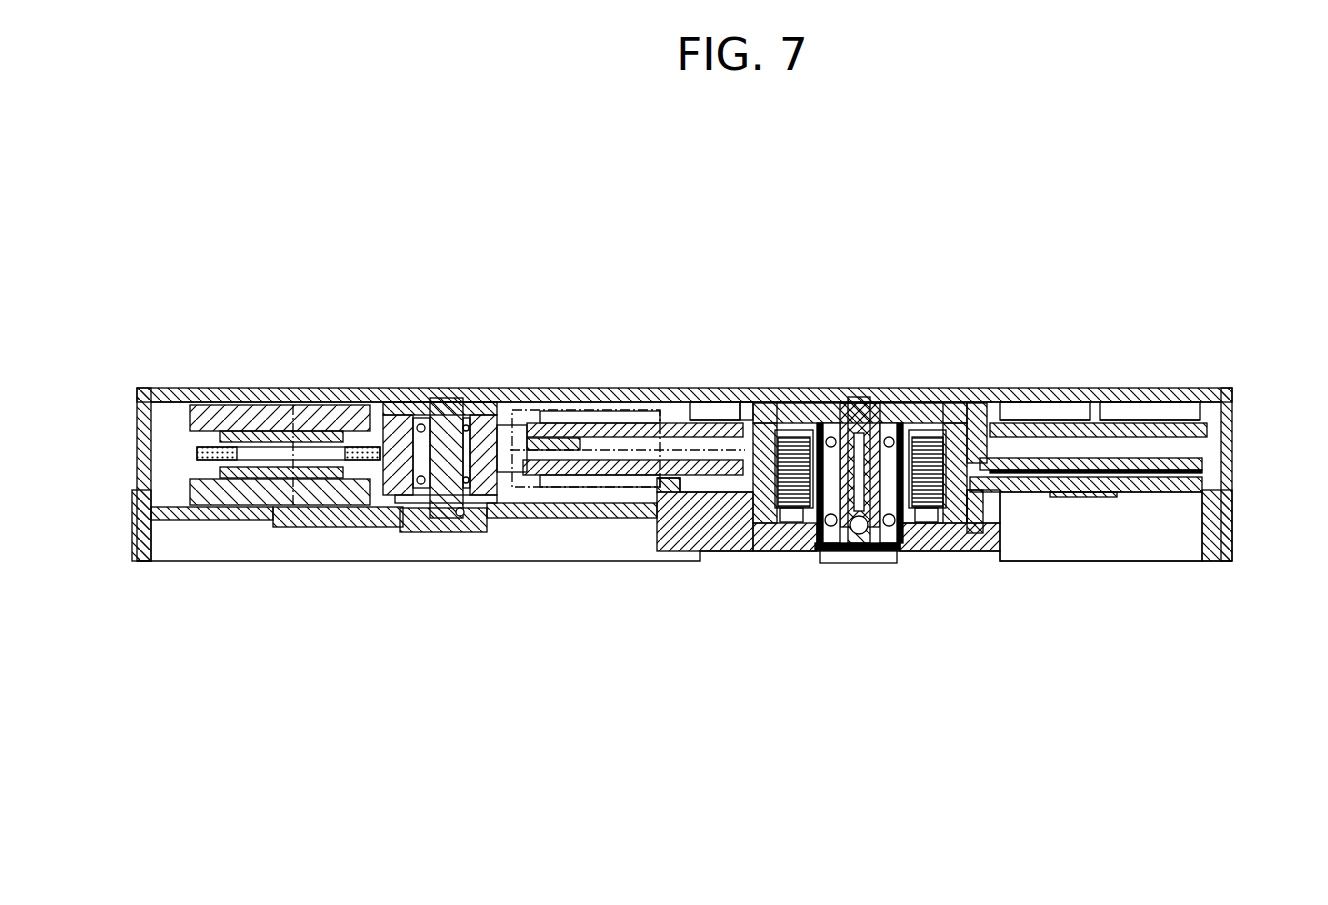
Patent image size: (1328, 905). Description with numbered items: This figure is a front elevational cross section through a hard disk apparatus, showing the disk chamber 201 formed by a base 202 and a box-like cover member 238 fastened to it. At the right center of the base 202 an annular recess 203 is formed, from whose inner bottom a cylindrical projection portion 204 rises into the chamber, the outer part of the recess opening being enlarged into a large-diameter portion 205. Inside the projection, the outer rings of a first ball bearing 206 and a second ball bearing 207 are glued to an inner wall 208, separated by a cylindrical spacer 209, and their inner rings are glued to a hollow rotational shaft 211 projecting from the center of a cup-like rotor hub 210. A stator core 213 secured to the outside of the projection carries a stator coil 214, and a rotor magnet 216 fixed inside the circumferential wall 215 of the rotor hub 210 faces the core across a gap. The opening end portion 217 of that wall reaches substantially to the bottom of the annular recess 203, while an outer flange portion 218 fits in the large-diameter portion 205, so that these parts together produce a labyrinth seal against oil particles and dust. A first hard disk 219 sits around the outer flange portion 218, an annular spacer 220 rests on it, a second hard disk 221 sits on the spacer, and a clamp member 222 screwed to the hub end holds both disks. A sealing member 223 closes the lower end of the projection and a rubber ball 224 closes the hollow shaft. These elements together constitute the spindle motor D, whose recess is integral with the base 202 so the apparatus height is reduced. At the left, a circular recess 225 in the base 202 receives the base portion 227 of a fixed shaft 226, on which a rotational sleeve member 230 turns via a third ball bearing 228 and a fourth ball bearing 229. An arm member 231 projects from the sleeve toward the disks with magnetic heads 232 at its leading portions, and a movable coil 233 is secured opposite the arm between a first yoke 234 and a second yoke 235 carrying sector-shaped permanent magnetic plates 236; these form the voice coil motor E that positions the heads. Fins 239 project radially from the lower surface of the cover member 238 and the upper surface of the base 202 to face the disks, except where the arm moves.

The disk chamber 201 is at (1208, 443).
The base 202 is at (655, 530).
The annular recess 203 is at (777, 520).
The cylindrical projection portion 204 is at (828, 403).
The large-diameter portion 205 is at (1010, 497).
The first ball bearing 206 is at (850, 405).
The second ball bearing 207 is at (900, 550).
The inner wall 208 is at (918, 530).
The cylindrical spacer 209 is at (830, 515).
The rotor hub 210 is at (812, 393).
The rotational shaft 211 is at (855, 545).
The stator core 213 is at (948, 398).
The stator coil 214 is at (792, 402).
The circumferential wall 215 is at (752, 402).
The rotor magnet 216 is at (983, 395).
The opening end portion 217 is at (697, 478).
The outer flange portion 218 is at (1200, 462).
The first hard disk 219 is at (655, 440).
The annular spacer 220 is at (690, 408).
The second hard disk 221 is at (1226, 394).
The clamp member 222 is at (995, 395).
The sealing member 223 is at (822, 535).
The rubber ball 224 is at (873, 565).
The circular recess 225 is at (463, 515).
The fixed shaft 226 is at (431, 414).
The base portion 227 is at (440, 515).
The third ball bearing 228 is at (468, 415).
The fourth ball bearing 229 is at (403, 492).
The rotational sleeve member 230 is at (383, 423).
The arm member 231 is at (546, 410).
The magnetic heads 232 is at (633, 415).
The movable coil 233 is at (197, 452).
The first yoke 234 is at (270, 413).
The second yoke 235 is at (334, 495).
The permanent magnetic plates 236 is at (237, 433).
The cover member 238 is at (1110, 398).
The fins 239 is at (715, 400).
The voice coil motor E is at (397, 393).
The spindle motor D is at (725, 560).